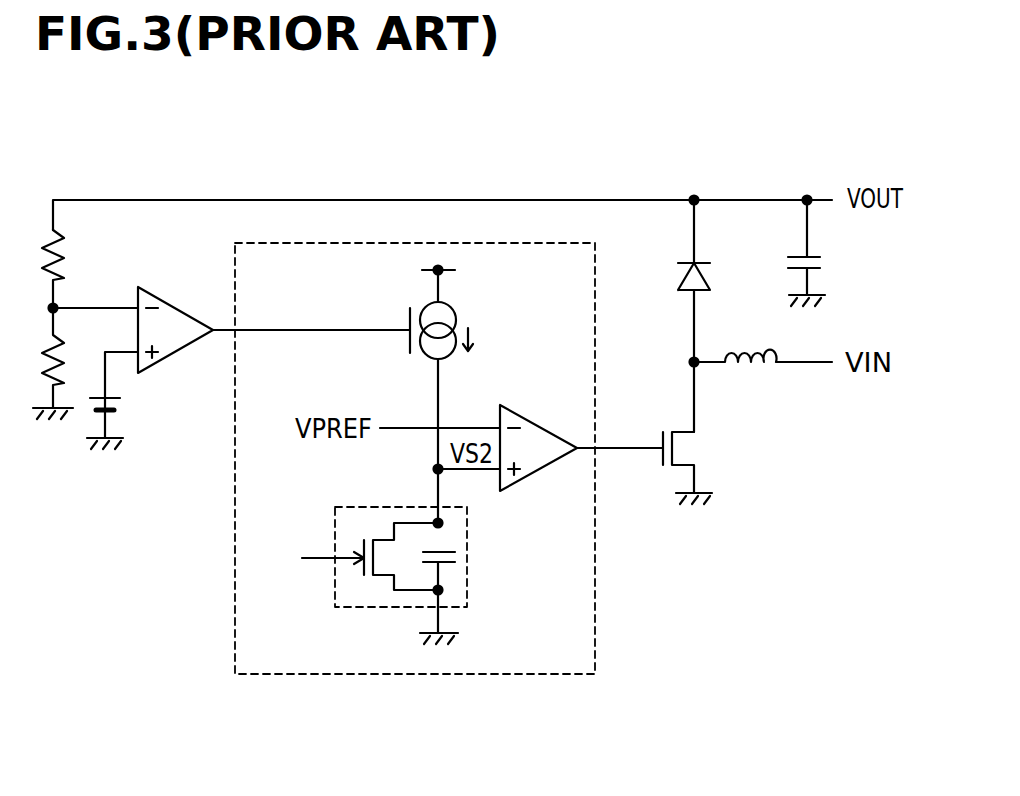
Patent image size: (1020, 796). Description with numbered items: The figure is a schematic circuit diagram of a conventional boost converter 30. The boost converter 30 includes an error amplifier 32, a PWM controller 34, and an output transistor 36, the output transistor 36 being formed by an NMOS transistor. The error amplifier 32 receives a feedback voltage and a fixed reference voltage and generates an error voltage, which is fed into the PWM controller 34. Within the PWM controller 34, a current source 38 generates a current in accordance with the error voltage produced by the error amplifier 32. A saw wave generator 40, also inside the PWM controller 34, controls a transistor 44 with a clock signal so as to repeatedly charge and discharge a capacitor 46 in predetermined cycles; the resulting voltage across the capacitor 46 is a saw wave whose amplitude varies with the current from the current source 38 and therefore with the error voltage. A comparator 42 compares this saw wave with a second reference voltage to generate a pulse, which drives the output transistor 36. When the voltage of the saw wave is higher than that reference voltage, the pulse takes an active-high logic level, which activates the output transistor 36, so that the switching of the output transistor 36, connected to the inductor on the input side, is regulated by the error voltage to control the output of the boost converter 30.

The boost converter 30 is at (177, 508).
The error amplifier 32 is at (168, 297).
The PWM controller 34 is at (602, 258).
The output transistor 36 is at (681, 432).
The current source 38 is at (456, 310).
The saw wave generator 40 is at (335, 596).
The comparator 42 is at (527, 420).
The transistor 44 is at (384, 540).
The capacitor 46 is at (455, 565).